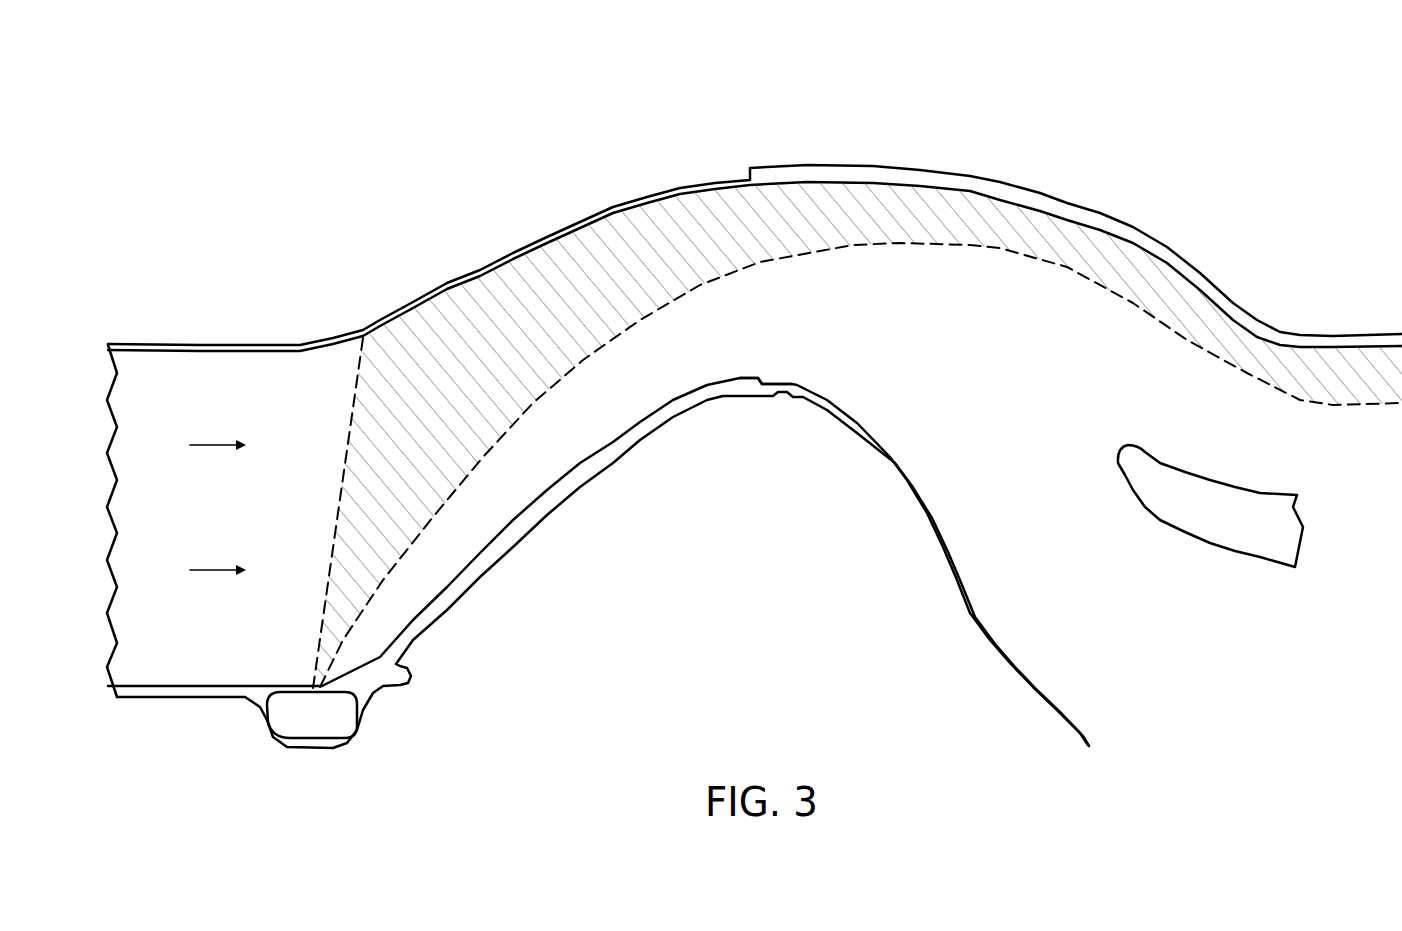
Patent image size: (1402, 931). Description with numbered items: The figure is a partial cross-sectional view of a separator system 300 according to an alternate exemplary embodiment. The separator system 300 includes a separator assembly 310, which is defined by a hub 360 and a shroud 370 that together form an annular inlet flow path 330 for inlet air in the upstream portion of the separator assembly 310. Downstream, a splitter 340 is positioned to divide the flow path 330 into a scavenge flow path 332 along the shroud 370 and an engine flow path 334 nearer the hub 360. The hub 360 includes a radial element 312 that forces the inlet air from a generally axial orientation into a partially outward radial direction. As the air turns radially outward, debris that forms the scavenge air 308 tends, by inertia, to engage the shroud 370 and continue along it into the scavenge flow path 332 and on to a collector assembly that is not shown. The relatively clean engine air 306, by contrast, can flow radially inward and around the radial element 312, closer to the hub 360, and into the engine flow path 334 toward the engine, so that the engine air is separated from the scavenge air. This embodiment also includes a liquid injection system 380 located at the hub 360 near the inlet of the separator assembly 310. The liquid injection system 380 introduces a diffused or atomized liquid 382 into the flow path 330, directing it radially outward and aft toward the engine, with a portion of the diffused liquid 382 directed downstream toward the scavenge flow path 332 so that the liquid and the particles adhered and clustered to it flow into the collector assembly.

The separator system 300 is at (234, 108).
The engine air 306 is at (1083, 575).
The scavenge air 308 is at (1257, 407).
The separator assembly 310 is at (785, 482).
The radial element 312 is at (793, 385).
The annular inlet flow path 330 is at (407, 472).
The scavenge flow path 332 is at (1240, 454).
The engine flow path 334 is at (1200, 609).
The splitter 340 is at (1125, 445).
The hub 360 is at (515, 545).
The shroud 370 is at (645, 196).
The liquid injection system 380 is at (313, 686).
The diffused liquid 382 is at (480, 286).